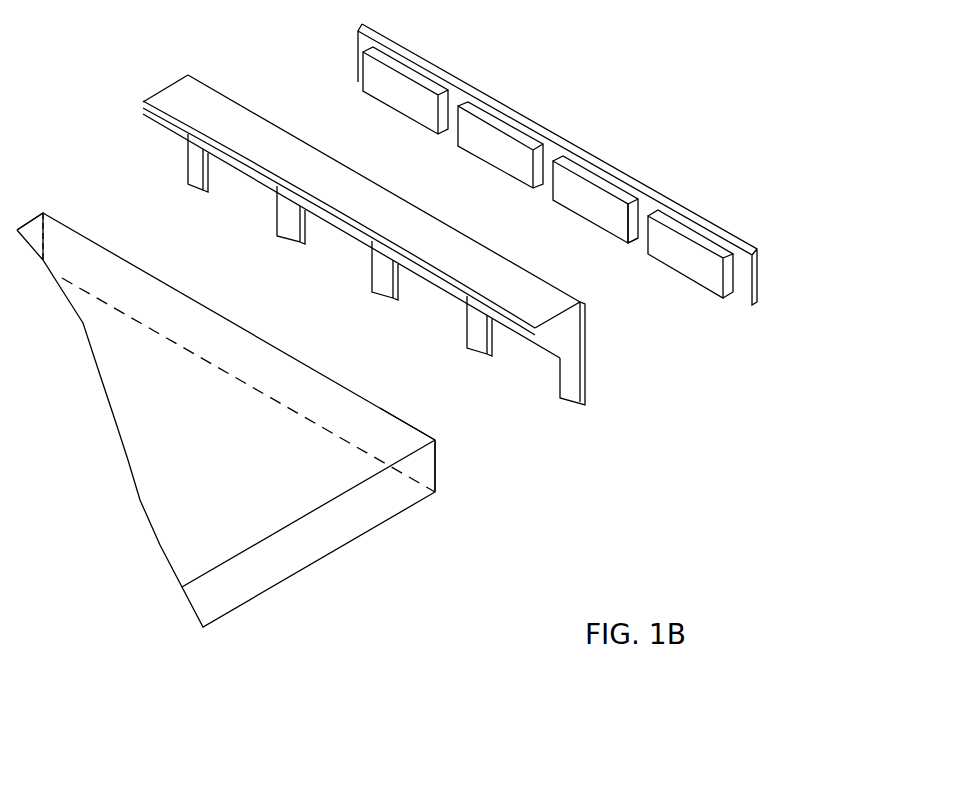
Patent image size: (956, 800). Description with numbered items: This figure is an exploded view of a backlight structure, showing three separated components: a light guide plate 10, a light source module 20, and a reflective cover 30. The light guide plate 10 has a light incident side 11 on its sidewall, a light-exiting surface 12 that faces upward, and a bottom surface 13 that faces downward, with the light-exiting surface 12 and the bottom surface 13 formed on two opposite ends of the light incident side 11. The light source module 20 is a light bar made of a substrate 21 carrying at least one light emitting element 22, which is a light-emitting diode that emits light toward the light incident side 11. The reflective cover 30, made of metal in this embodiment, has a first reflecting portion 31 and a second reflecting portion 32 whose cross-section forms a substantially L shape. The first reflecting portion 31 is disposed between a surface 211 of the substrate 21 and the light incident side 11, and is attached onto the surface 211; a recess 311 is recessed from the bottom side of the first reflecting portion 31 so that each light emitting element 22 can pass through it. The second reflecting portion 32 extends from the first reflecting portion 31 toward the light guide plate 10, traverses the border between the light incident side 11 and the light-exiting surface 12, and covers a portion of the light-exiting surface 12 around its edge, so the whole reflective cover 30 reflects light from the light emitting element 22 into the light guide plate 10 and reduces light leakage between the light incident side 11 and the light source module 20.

The light guide plate 10 is at (230, 494).
The light incident side 11 is at (428, 428).
The light-exiting surface 12 is at (88, 267).
The bottom surface 13 is at (388, 502).
The light source module 20 is at (583, 203).
The substrate 21 is at (757, 271).
The surface 211 is at (640, 233).
The light emitting element 22 is at (711, 272).
The reflective cover 30 is at (412, 283).
The first reflecting portion 31 is at (570, 340).
The second reflecting portion 32 is at (557, 296).
The recess 311 is at (527, 366).